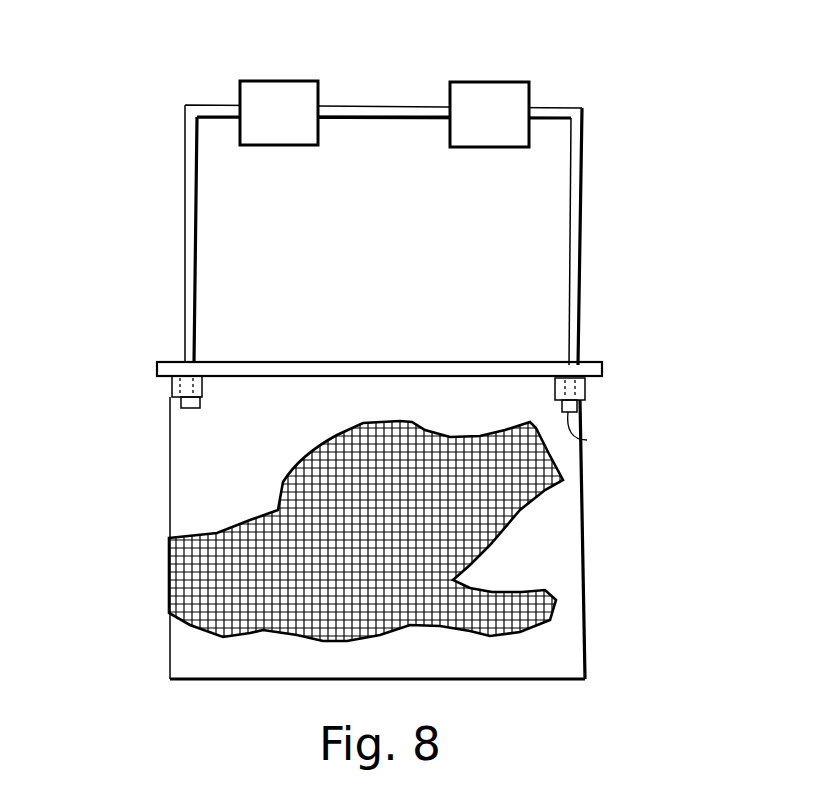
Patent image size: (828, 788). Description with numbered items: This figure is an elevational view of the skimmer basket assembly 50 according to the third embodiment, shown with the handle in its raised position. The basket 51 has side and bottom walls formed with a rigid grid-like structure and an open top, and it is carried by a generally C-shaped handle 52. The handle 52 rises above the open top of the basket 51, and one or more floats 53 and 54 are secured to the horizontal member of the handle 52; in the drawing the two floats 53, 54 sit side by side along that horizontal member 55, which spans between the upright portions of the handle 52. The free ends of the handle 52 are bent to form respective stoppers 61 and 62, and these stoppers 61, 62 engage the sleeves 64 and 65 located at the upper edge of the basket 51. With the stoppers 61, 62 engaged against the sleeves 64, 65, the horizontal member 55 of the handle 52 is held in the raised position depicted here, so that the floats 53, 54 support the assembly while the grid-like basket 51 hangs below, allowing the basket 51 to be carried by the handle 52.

The skimmer basket assembly 50 is at (371, 538).
The basket 51 is at (570, 517).
The handle 52 is at (628, 248).
The float 53 is at (282, 88).
The float 54 is at (475, 98).
The connecting bar 55 is at (370, 110).
The stopper 61 is at (191, 408).
The stopper 62 is at (587, 440).
The sleeve 64 is at (172, 383).
The sleeve 65 is at (577, 388).